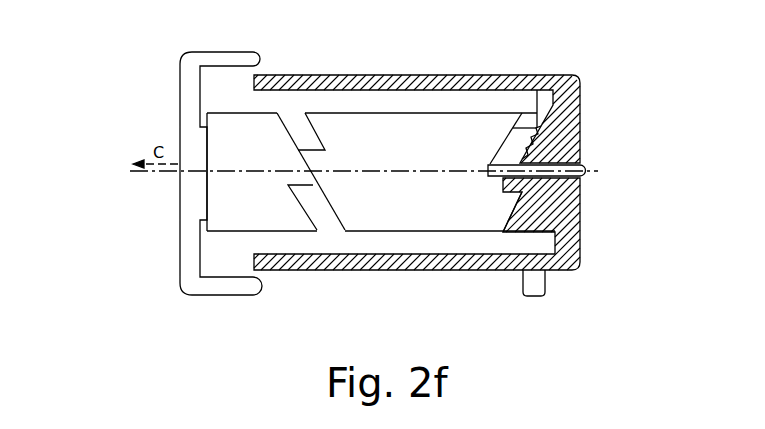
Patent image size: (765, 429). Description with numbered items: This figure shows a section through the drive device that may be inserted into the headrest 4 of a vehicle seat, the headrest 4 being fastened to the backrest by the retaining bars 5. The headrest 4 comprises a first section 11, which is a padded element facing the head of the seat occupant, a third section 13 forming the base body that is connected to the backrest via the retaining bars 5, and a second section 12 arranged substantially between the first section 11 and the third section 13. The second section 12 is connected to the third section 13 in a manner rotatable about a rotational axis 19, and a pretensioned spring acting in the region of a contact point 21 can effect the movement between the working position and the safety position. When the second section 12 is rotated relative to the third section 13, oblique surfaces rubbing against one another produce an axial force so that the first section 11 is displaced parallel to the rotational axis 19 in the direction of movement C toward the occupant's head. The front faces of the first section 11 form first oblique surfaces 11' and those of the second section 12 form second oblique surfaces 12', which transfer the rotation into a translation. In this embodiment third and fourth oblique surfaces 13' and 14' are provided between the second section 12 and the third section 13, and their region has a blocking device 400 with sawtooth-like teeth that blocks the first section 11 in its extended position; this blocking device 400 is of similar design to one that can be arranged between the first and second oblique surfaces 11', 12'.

The headrest 4 is at (136, 67).
The first section 11 is at (192, 173).
The first oblique surfaces 11' is at (304, 131).
The second section 12 is at (381, 210).
The second oblique surfaces 12' is at (318, 131).
The third section 13 is at (444, 172).
The third oblique surfaces 13' is at (495, 253).
The fourth oblique surfaces 14' is at (488, 214).
The rotational axis 19 is at (596, 171).
The contact point 21 is at (537, 114).
The blocking device 400 is at (500, 188).
The retaining bars 5 is at (540, 287).